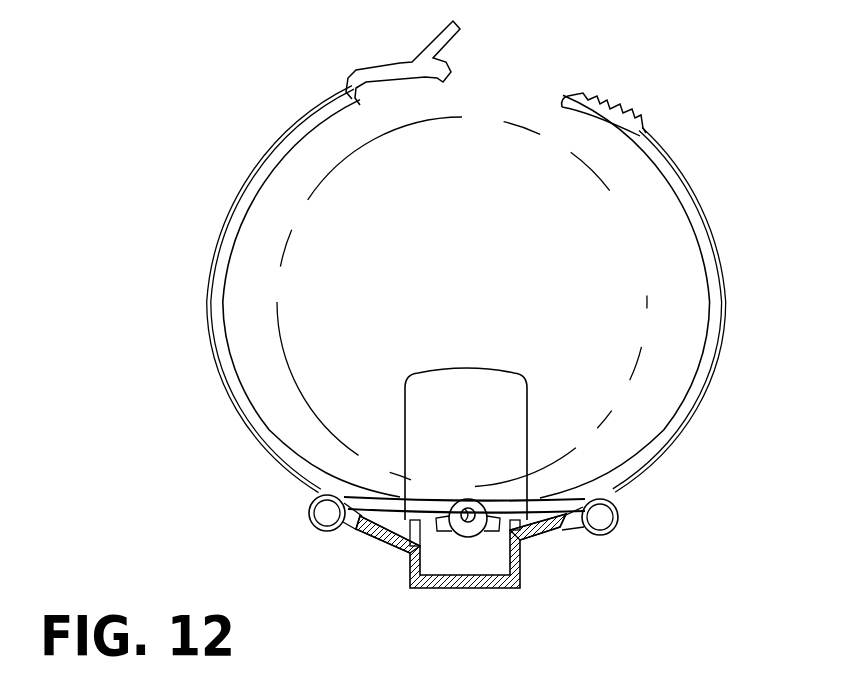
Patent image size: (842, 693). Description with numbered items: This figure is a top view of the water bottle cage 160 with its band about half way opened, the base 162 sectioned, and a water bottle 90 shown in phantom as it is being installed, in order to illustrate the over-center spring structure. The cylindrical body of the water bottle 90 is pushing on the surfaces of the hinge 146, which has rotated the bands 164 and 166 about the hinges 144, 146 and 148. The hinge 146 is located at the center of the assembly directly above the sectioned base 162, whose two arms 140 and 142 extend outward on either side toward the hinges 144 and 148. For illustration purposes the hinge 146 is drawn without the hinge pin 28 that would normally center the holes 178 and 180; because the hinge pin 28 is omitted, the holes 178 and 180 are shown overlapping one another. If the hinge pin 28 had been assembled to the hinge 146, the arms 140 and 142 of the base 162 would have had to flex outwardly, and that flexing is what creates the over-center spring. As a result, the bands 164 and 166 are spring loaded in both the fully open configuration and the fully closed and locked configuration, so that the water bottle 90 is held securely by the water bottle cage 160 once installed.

The water bottle cage 160 is at (699, 154).
The band 166 is at (209, 280).
The band 164 is at (707, 244).
The water bottle 90 is at (322, 181).
The hinge 146 is at (452, 500).
The hinge 144 is at (310, 503).
The hinge 148 is at (621, 511).
The hinge pin 28 is at (327, 518).
The base 162 is at (502, 590).
The arm 140 is at (389, 540).
The arm 142 is at (549, 538).
The hole 178 is at (462, 513).
The hole 180 is at (488, 502).